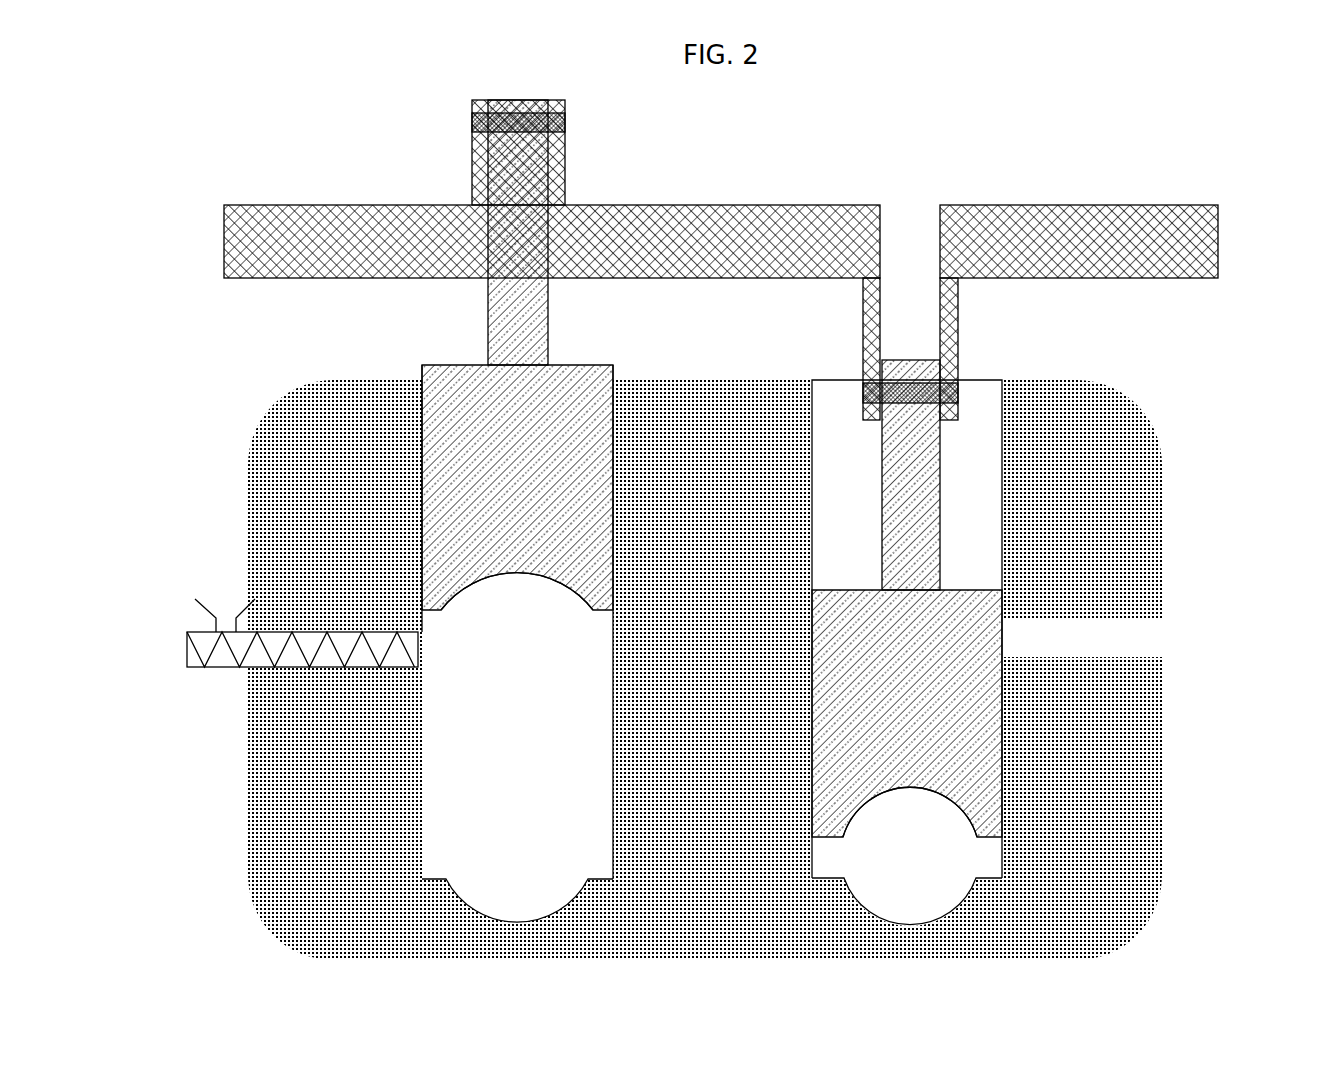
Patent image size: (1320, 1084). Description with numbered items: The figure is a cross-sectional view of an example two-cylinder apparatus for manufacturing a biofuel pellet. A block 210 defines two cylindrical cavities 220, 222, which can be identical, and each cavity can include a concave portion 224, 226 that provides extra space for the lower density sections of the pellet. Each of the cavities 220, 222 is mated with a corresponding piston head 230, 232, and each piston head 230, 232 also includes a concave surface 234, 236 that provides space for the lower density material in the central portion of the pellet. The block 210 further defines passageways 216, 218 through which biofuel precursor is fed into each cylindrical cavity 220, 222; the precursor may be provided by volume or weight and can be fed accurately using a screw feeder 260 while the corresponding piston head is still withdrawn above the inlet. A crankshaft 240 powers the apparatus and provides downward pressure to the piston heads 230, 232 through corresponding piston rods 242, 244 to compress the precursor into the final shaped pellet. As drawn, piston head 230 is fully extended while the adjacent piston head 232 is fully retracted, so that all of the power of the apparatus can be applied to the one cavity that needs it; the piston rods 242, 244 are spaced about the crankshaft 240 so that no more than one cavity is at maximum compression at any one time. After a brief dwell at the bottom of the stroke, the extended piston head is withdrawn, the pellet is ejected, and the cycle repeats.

The block 210 is at (714, 635).
The passageway 216 is at (1092, 650).
The passageway 218 is at (350, 655).
The cylindrical cavity 220 is at (967, 490).
The cylindrical cavity 222 is at (462, 781).
The concave portion 224 is at (918, 918).
The concave portion 226 is at (522, 918).
The piston head 230 is at (970, 780).
The piston head 232 is at (463, 473).
The concave surface 234 is at (912, 790).
The concave surface 236 is at (523, 573).
The crankshaft 240 is at (372, 238).
The piston rod 242 is at (920, 495).
The piston rod 244 is at (505, 298).
The screw feeder 260 is at (228, 648).